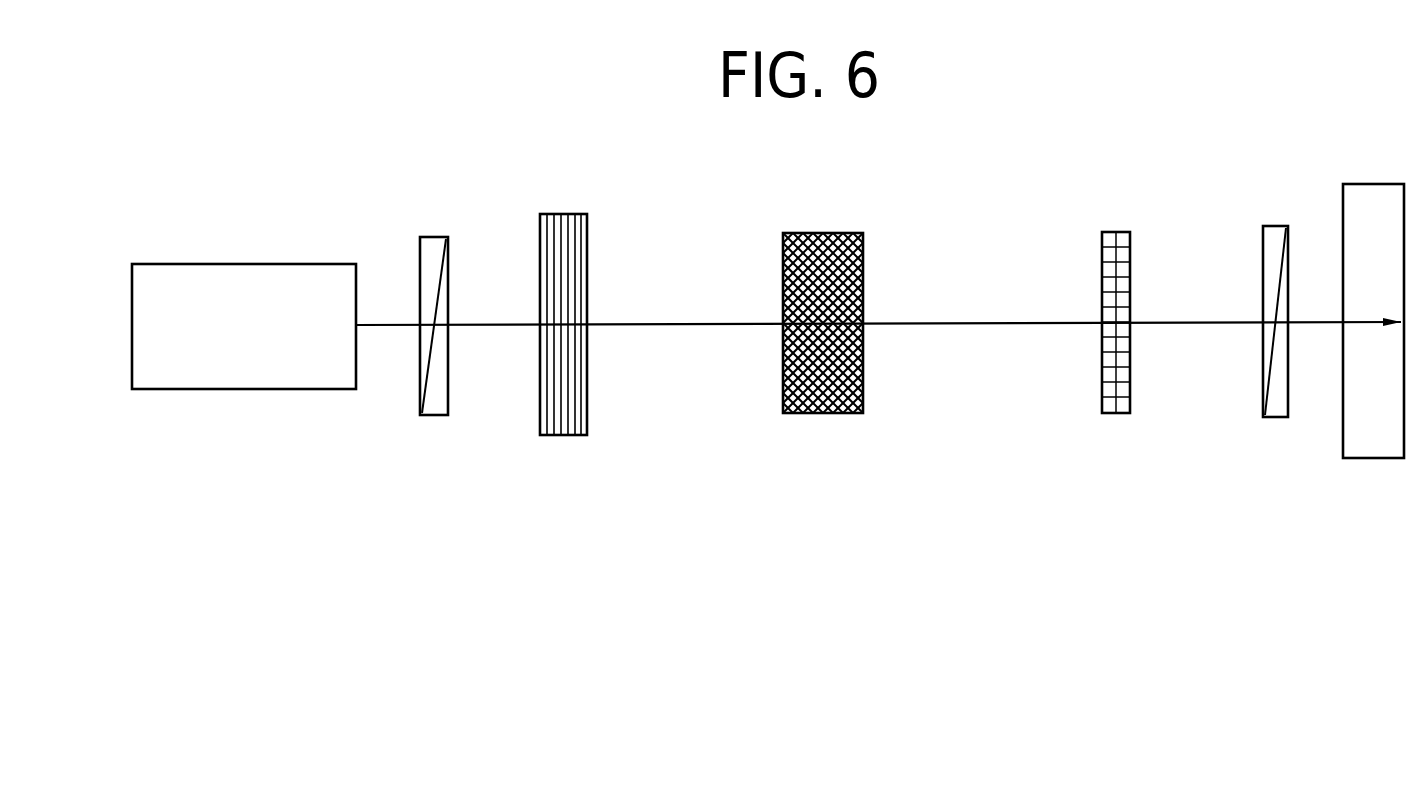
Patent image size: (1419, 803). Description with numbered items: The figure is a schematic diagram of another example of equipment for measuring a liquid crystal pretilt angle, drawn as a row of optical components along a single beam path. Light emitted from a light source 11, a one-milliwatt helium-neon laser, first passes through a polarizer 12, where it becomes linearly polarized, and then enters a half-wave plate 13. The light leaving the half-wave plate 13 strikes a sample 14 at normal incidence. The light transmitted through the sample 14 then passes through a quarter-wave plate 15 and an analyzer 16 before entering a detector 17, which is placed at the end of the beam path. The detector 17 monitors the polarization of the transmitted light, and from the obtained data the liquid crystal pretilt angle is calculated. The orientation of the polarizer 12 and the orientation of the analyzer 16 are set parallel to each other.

The light source 11 is at (246, 264).
The polarizer 12 is at (435, 237).
The ½-wave plate 13 is at (566, 213).
The sample 14 is at (826, 233).
The ¼-wave plate 15 is at (1117, 232).
The analyzer 16 is at (1276, 226).
The detector 17 is at (1375, 184).